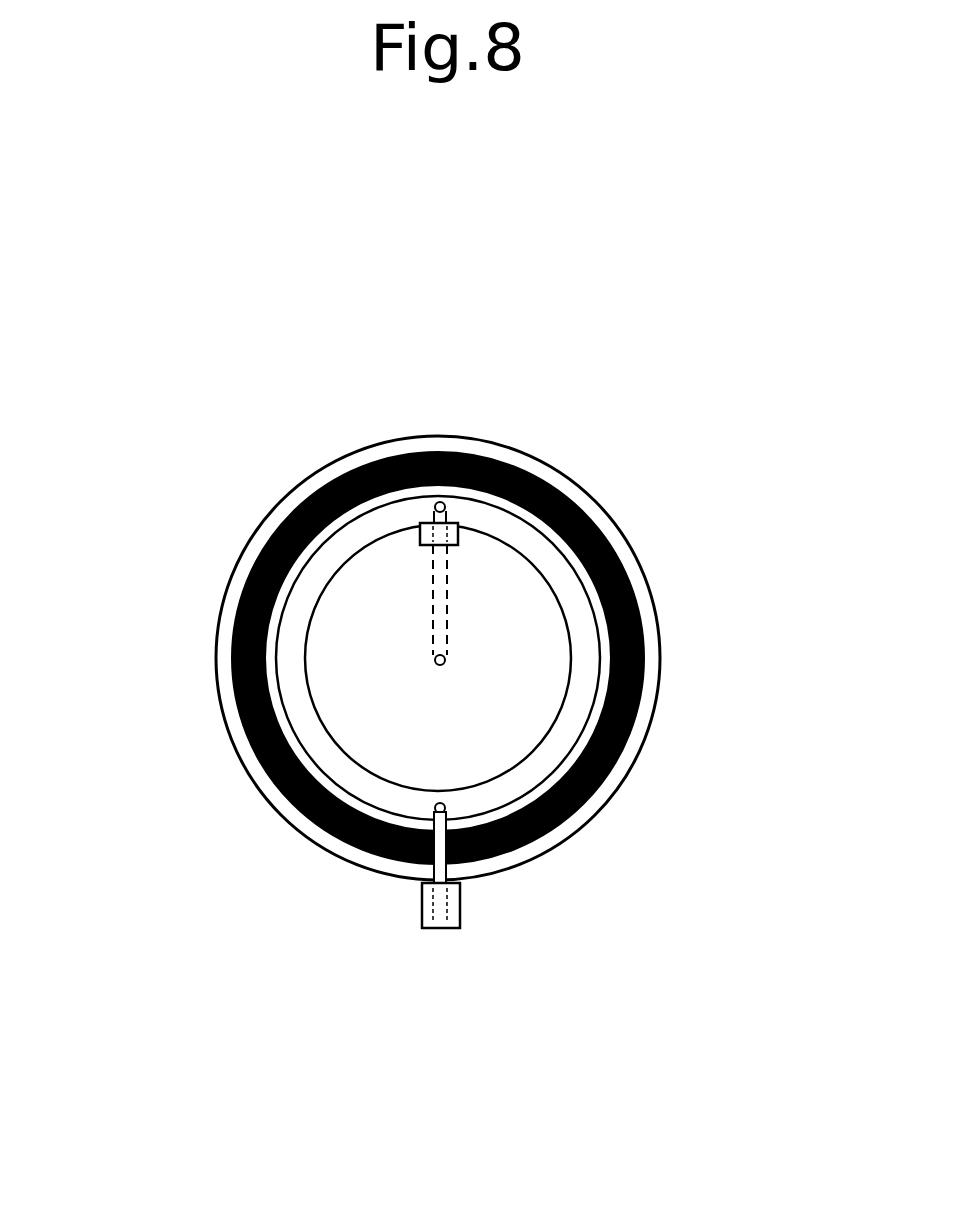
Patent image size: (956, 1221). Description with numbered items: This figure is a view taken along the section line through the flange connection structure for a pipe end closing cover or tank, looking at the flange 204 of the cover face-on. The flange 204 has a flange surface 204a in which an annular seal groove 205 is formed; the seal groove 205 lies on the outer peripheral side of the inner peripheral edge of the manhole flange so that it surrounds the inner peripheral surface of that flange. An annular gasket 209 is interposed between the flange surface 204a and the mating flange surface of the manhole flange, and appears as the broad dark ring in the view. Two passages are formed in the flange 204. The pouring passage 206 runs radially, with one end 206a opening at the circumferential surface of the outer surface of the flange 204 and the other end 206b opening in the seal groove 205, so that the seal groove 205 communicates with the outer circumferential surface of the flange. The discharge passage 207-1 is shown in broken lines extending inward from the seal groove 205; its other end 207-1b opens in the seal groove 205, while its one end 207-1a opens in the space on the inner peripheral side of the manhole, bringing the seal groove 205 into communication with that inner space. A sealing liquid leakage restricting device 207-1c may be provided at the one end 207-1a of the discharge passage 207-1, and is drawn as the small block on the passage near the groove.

The flange 204 is at (603, 504).
The flange surface 204a is at (633, 562).
The annular seal groove 205 is at (582, 615).
The annular gasket 209 is at (635, 727).
The discharge passage 207-1 is at (447, 570).
The one end of the discharge passage 207-1a is at (434, 661).
The other end of the discharge passage 207-1b is at (435, 507).
The sealing liquid leakage restricting device 207-1c is at (420, 537).
The pouring passage 206 is at (432, 873).
The one end of the pouring passage 206a is at (442, 929).
The other end of the pouring passage 206b is at (436, 808).